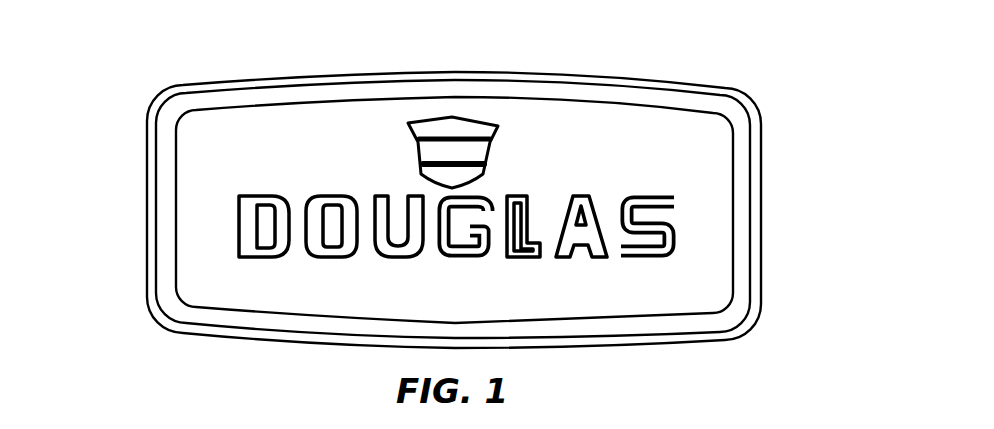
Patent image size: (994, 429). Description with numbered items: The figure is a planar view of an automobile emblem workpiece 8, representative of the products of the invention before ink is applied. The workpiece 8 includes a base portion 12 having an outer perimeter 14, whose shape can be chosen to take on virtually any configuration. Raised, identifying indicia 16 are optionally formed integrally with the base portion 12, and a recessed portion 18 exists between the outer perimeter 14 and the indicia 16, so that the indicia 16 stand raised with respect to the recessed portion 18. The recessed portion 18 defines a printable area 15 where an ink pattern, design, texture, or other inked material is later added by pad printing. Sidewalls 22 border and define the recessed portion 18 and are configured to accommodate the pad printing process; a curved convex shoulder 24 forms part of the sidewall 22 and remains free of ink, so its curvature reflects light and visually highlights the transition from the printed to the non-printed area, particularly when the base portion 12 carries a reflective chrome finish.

The automobile emblem workpiece 8 is at (454, 186).
The base portion 12 is at (760, 258).
The outer perimeter 14 is at (638, 82).
The curved convex shoulder 24 is at (737, 137).
The sidewall 22 is at (177, 202).
The recessed portion 18 is at (207, 270).
The printable area 15 is at (265, 130).
The raised identifying indicia 16 is at (670, 227).